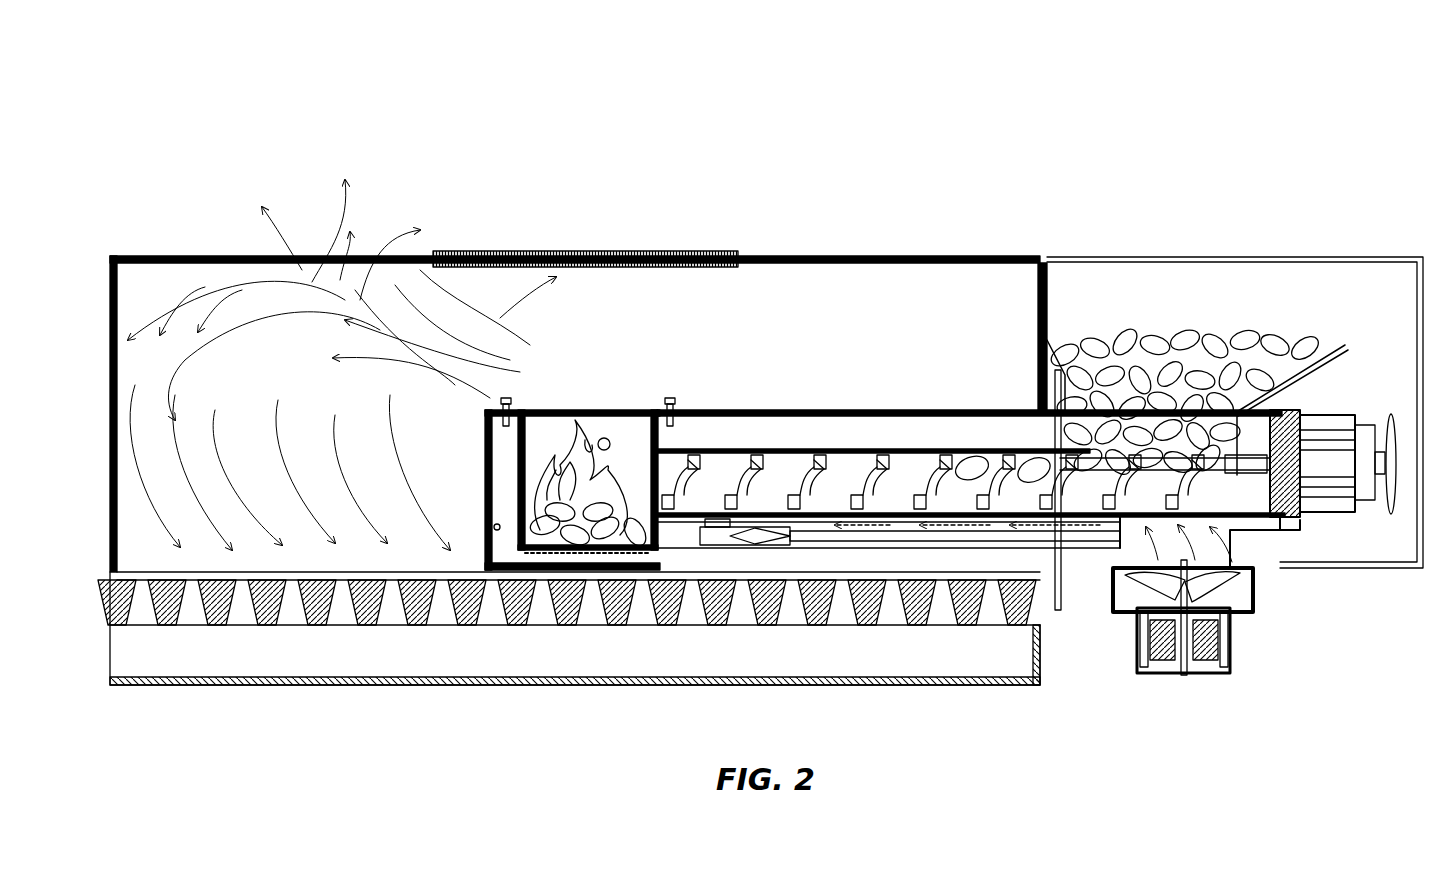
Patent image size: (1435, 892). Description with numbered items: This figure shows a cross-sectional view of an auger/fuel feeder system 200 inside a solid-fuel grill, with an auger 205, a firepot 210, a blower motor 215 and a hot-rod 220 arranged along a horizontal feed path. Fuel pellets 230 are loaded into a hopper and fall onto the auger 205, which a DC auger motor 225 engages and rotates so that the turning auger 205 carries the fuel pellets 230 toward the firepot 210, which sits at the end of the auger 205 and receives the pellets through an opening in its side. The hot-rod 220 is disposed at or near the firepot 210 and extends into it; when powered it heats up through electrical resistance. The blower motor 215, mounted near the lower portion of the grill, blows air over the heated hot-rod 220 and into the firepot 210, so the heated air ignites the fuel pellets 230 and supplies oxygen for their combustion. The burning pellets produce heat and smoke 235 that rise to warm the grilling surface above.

The auger/fuel feeder system 200 is at (898, 185).
The auger 205 is at (860, 420).
The firepot 210 is at (608, 548).
The blower motor 215 is at (1213, 648).
The hot-rod 220 is at (700, 534).
The DC auger motor 225 is at (1325, 415).
The fuel pellets 230 is at (1173, 330).
The heat and smoke 235 is at (318, 283).